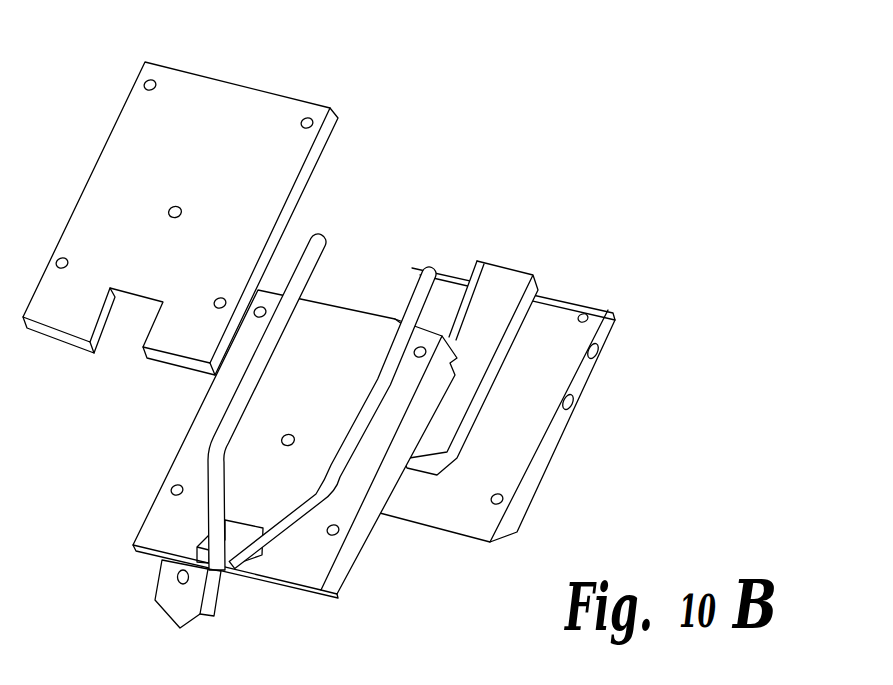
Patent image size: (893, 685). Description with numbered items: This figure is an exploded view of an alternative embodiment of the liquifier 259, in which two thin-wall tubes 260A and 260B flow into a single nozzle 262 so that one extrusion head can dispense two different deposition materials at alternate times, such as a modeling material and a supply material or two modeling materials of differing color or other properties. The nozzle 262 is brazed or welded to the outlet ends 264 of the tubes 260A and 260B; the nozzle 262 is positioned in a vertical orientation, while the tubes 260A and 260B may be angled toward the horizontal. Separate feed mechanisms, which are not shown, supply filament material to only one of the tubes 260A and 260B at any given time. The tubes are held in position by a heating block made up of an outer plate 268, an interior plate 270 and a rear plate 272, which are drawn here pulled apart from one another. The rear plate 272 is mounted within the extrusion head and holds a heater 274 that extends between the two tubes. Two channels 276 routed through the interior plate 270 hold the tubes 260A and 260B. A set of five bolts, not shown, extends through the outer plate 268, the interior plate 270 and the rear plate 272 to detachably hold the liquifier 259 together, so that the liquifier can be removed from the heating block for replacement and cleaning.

The liquifier 259 is at (628, 331).
The thin-wall tube 260A is at (308, 238).
The thin-wall tube 260B is at (432, 266).
The nozzle 262 is at (175, 598).
The outlet ends 264 is at (243, 572).
The outer plate 268 is at (212, 97).
The interior plate 270 is at (200, 436).
The rear plate 272 is at (517, 432).
The heater 274 is at (493, 293).
The channels 276 is at (396, 318).